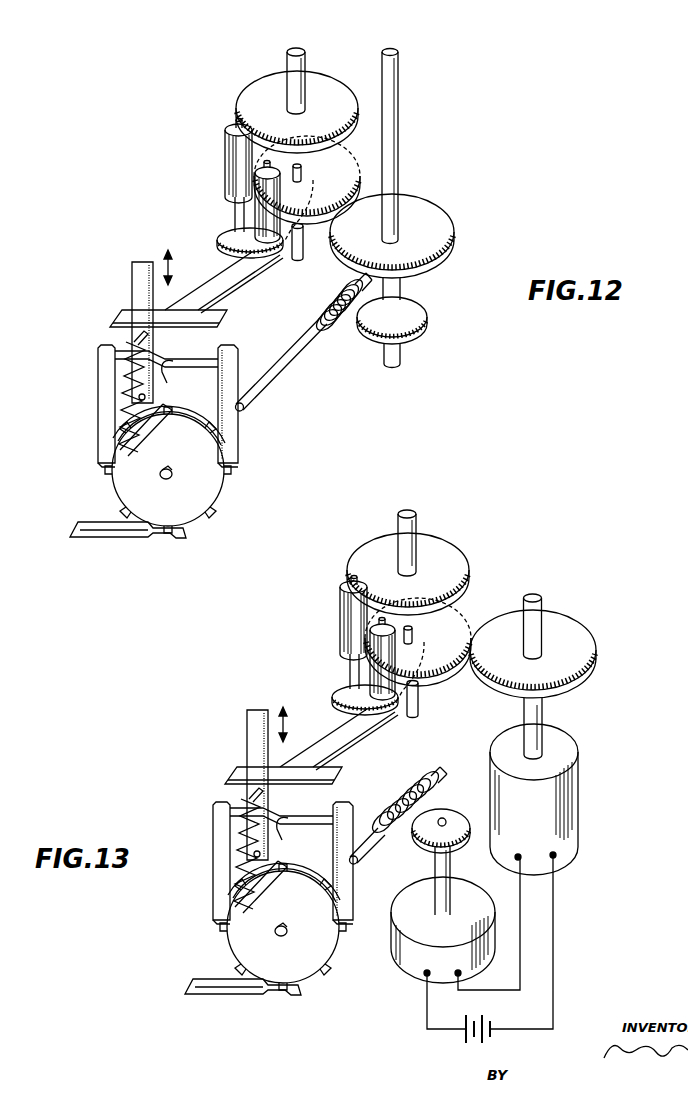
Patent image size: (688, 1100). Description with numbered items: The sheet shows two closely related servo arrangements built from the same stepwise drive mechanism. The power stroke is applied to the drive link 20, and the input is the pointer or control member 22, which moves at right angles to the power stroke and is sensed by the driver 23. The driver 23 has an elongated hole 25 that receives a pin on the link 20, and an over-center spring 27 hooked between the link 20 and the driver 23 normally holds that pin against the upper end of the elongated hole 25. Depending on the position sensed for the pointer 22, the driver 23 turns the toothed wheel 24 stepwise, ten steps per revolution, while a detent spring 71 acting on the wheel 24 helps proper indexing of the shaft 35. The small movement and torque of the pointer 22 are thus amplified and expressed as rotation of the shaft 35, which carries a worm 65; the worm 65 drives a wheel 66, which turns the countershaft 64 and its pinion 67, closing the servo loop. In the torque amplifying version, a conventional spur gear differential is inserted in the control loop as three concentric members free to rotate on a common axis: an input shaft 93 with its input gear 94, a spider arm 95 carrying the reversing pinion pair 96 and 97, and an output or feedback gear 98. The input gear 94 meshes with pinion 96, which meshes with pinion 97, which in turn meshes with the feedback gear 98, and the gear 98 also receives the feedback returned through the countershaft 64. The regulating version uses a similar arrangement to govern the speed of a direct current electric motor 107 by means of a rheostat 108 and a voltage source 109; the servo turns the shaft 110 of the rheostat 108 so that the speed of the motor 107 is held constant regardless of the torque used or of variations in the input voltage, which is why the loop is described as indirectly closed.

In FIG. 12, the link 20 is at (132, 287).
In FIG. 13, the link 20 is at (247, 737).
In FIG. 12, the control member 22 is at (224, 294).
In FIG. 13, the control member 22 is at (337, 748).
In FIG. 12, the driver 23 is at (240, 428).
In FIG. 13, the driver 23 is at (213, 906).
In FIG. 12, the toothed wheel 24 is at (226, 487).
In FIG. 13, the toothed wheel 24 is at (338, 950).
In FIG. 12, the elongated hole 25 is at (166, 376).
In FIG. 13, the elongated hole 25 is at (285, 836).
In FIG. 12, the over-center spring 27 is at (120, 391).
In FIG. 13, the over-center spring 27 is at (233, 856).
In FIG. 12, the shaft 35 is at (282, 368).
In FIG. 13, the shaft 35 is at (365, 858).
In FIG. 12, the countershaft 64 is at (400, 150).
In FIG. 12, the worm 65 is at (333, 294).
In FIG. 13, the worm 65 is at (408, 790).
In FIG. 12, the wheel 66 is at (428, 323).
In FIG. 13, the wheel 66 is at (448, 812).
In FIG. 12, the pinion 67 is at (455, 236).
In FIG. 13, the pinion 67 is at (596, 681).
In FIG. 12, the detent spring 71 is at (102, 539).
In FIG. 13, the detent spring 71 is at (208, 1000).
In FIG. 12, the input shaft 93 is at (300, 52).
In FIG. 13, the input shaft 93 is at (418, 518).
In FIG. 12, the input gear 94 is at (327, 73).
In FIG. 13, the input gear 94 is at (463, 548).
In FIG. 12, the spider arm 95 is at (222, 232).
In FIG. 13, the spider arm 95 is at (337, 690).
In FIG. 12, the reversing pinion 96 is at (224, 146).
In FIG. 13, the reversing pinion 96 is at (340, 602).
In FIG. 12, the reversing pinion 97 is at (276, 248).
In FIG. 13, the reversing pinion 97 is at (399, 702).
In FIG. 12, the feedback gear 98 is at (346, 158).
In FIG. 13, the feedback gear 98 is at (462, 612).
In FIG. 13, the direct current electric motor 107 is at (580, 805).
In FIG. 13, the rheostat 108 is at (410, 973).
In FIG. 13, the voltage source 109 is at (460, 1038).
In FIG. 13, the shaft 110 is at (452, 868).